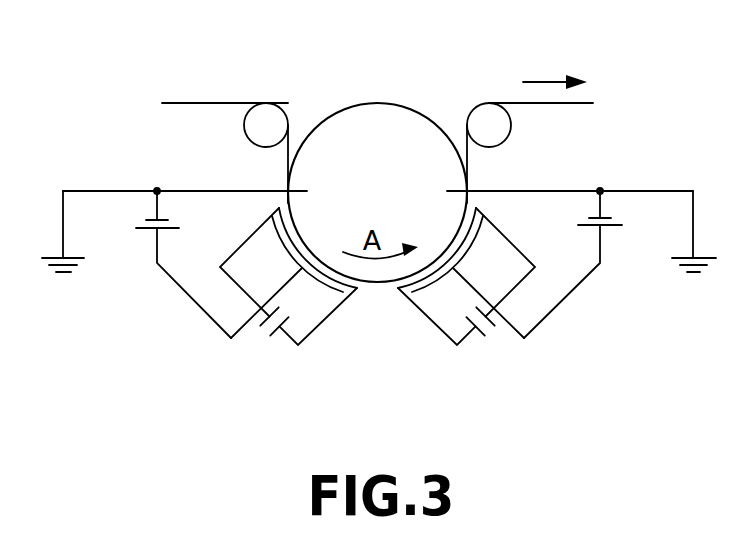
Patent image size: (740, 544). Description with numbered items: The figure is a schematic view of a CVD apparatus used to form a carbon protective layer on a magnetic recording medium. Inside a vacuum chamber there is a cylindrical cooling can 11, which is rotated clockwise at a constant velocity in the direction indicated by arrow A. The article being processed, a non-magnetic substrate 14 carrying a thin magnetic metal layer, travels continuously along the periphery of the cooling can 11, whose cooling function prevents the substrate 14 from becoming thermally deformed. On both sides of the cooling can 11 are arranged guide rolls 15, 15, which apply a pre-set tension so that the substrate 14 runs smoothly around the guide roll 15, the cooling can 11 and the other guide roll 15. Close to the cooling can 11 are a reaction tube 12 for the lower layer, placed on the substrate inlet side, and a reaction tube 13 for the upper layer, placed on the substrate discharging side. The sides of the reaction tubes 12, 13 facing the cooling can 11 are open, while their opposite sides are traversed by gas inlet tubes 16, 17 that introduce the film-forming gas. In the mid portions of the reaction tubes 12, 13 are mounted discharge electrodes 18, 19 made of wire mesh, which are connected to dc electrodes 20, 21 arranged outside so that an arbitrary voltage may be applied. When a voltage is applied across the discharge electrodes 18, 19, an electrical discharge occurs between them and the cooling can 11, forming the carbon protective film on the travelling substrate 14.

The cooling can 11 is at (392, 120).
The reaction tube 12 is at (325, 320).
The reaction tube 13 is at (430, 320).
The non-magnetic substrate 14 is at (548, 103).
The guide roll 15 is at (270, 118).
The gas inlet tube 16 is at (270, 336).
The gas inlet tube 17 is at (485, 336).
The discharge electrode 18 is at (283, 242).
The discharge electrode 19 is at (472, 242).
The dc electrode 20 is at (137, 228).
The dc electrode 21 is at (608, 227).